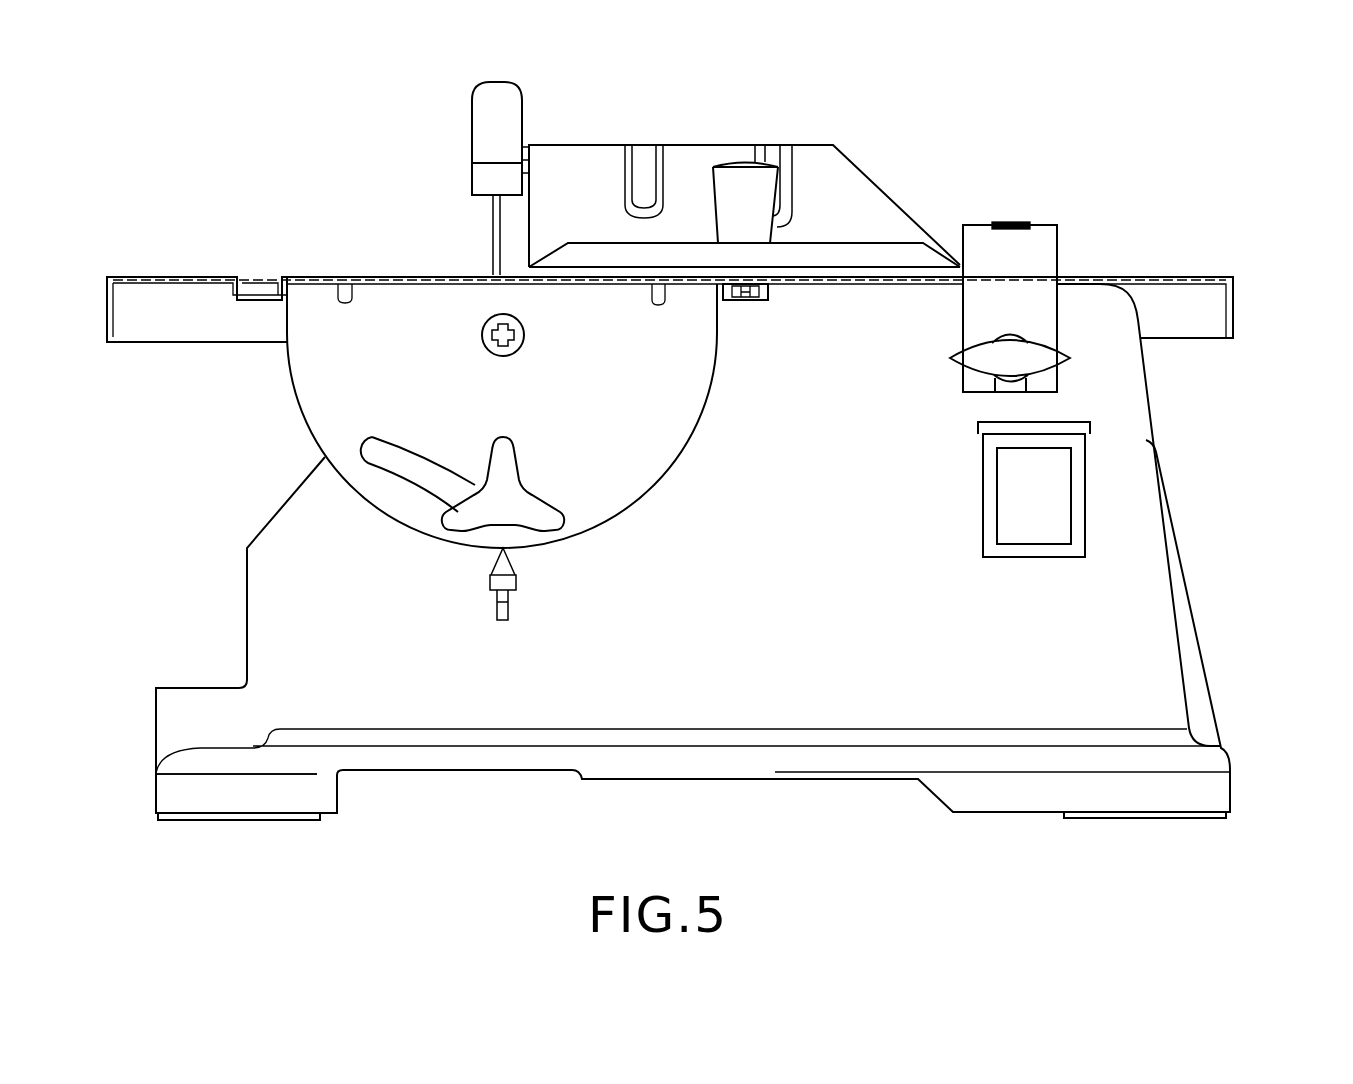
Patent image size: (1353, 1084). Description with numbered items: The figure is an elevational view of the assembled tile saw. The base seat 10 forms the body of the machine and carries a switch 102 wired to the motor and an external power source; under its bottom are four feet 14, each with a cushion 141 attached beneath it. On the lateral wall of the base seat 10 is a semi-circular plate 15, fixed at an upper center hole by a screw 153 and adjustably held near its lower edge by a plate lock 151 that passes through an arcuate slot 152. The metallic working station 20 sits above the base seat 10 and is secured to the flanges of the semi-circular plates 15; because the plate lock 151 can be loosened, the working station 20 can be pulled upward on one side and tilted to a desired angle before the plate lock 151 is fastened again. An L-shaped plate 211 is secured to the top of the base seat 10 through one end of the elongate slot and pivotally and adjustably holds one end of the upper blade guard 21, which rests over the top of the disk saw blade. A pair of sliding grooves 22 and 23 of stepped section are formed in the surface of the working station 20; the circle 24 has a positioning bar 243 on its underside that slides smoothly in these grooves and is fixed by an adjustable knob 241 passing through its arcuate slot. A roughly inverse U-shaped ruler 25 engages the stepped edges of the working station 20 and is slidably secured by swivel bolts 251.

The base seat 10 is at (1135, 535).
The switch 102 is at (1051, 475).
The feet 14 is at (280, 800).
The cushion 141 is at (205, 818).
The semi-circular plate 15 is at (383, 388).
The plate lock 151 is at (485, 513).
The arcuate slot 152 is at (383, 452).
The screw 153 is at (522, 340).
The working station 20 is at (1206, 249).
The upper blade guard 21 is at (512, 108).
The L-shaped plate 211 is at (495, 217).
The sliding groove 22 is at (257, 287).
The sliding groove 23 is at (768, 298).
The circle 24 is at (865, 213).
The adjustable knob 241 is at (730, 185).
The positioning bar 243 is at (740, 300).
The ruler 25 is at (1010, 247).
The swivel bolt 251 is at (1025, 355).